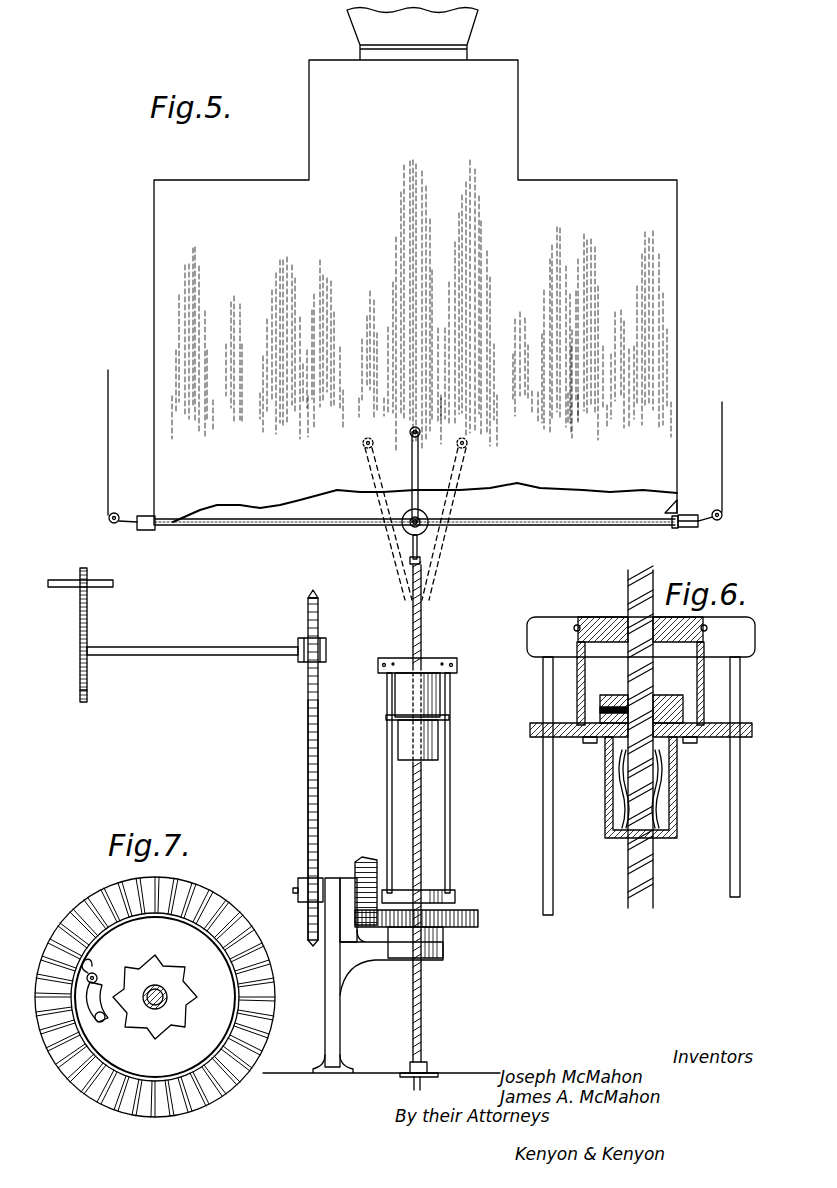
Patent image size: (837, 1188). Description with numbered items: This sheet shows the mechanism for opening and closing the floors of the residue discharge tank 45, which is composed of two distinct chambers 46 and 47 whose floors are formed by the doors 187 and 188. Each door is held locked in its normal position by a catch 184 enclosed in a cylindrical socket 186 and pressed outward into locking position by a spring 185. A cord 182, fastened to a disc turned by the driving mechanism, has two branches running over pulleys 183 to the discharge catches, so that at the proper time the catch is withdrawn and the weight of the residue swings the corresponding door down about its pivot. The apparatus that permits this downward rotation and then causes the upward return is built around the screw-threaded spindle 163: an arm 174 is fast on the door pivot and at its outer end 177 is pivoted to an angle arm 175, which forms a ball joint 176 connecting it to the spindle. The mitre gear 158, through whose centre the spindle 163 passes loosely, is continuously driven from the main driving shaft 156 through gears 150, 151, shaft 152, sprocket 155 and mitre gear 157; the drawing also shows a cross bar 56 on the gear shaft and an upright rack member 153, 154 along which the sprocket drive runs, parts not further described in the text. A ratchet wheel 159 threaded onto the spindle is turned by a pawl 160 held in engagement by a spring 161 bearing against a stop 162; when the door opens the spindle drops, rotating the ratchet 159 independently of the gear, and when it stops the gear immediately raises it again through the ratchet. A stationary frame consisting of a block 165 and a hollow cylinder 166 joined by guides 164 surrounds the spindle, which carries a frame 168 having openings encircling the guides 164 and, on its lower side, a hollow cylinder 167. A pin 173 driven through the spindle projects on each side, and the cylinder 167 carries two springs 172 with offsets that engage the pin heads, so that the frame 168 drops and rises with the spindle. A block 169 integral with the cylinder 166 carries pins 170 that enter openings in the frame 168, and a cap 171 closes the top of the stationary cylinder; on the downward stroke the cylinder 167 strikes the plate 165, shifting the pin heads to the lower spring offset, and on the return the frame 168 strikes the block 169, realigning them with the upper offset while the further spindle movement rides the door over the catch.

In FIG. 5, the tank 45 is at (665, 300).
In FIG. 5, the discharge chamber 46 is at (650, 505).
In FIG. 5, the discharge chamber 47 is at (345, 508).
In FIG. 5, the cross bar 56 is at (100, 582).
In FIG. 5, the gear 150 is at (80, 568).
In FIG. 5, the gear 151 is at (80, 688).
In FIG. 5, the shaft 152 is at (200, 656).
In FIG. 5, the rack upper end 153 is at (313, 598).
In FIG. 5, the rack 154 is at (308, 757).
In FIG. 5, the sprocket 155 is at (315, 942).
In FIG. 5, the main driving shaft 156 is at (294, 890).
In FIG. 5, the mitre gear 157 is at (365, 860).
In FIG. 5, the mitre gear 158 is at (460, 918).
In FIG. 7, the mitre gear 158 is at (88, 1085).
In FIG. 7, the ratchet wheel 159 is at (140, 968).
In FIG. 7, the pawl 160 is at (110, 1020).
In FIG. 7, the spring 161 is at (95, 976).
In FIG. 7, the stop 162 is at (90, 968).
In FIG. 5, the screw-threaded spindle 163 is at (422, 1013).
In FIG. 6, the screw-threaded spindle 163 is at (640, 898).
In FIG. 7, the screw-threaded spindle 163 is at (162, 990).
In FIG. 5, the guides 164 is at (389, 788).
In FIG. 6, the guides 164 is at (553, 890).
In FIG. 5, the block 165 is at (440, 893).
In FIG. 5, the hollow cylinder 166 is at (425, 698).
In FIG. 6, the hollow cylinder 166 is at (640, 683).
In FIG. 5, the hollow cylinder 167 is at (435, 748).
In FIG. 6, the hollow cylinder 167 is at (678, 780).
In FIG. 6, the frame 168 is at (755, 730).
In FIG. 6, the block 169 is at (680, 707).
In FIG. 6, the pins 170 is at (700, 717).
In FIG. 6, the cap 171 is at (705, 677).
In FIG. 6, the springs 172 is at (622, 797).
In FIG. 5, the pin 173 is at (403, 528).
In FIG. 6, the pin 173 is at (622, 763).
In FIG. 5, the arm 174 is at (420, 440).
In FIG. 5, the angle arm 175 is at (419, 545).
In FIG. 5, the ball joint 176 is at (410, 564).
In FIG. 5, the outer end 177 is at (415, 427).
In FIG. 5, the cord 182 is at (108, 417).
In FIG. 5, the pulleys 183 is at (110, 514).
In FIG. 5, the catch 184 is at (155, 527).
In FIG. 5, the spring 185 is at (695, 528).
In FIG. 5, the cylindrical socket 186 is at (679, 512).
In FIG. 5, the door 187 is at (550, 524).
In FIG. 5, the door 188 is at (232, 525).